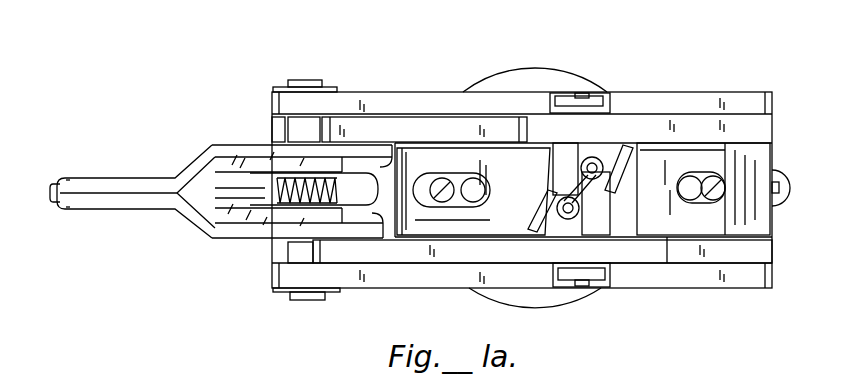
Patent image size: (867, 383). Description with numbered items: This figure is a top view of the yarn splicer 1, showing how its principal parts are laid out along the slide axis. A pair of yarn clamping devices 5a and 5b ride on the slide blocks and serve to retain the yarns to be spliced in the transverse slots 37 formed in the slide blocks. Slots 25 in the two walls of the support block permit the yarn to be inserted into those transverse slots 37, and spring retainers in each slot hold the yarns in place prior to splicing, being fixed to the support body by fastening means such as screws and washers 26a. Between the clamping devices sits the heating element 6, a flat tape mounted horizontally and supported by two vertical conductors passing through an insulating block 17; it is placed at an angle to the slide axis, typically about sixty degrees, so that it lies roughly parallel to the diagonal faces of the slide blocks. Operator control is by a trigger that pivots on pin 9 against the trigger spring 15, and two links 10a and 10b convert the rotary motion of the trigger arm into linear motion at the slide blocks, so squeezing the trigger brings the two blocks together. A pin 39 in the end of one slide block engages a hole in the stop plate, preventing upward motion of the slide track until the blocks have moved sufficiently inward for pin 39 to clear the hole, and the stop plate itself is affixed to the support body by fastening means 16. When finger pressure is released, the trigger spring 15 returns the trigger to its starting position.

The splicer 1 is at (737, 48).
The yarn clamping device 5a is at (658, 198).
The yarn clamping device 5b is at (530, 198).
The heating element 6 is at (615, 150).
The pin 9 is at (307, 298).
The link 10a is at (397, 252).
The link 10b is at (418, 125).
The trigger spring 15 is at (310, 200).
The fastening means 16 is at (785, 200).
The insulating block 17 is at (592, 152).
The slots 25 is at (563, 100).
The screws and washers 26a is at (583, 95).
The transverse slots 37 is at (557, 150).
The pin 39 is at (785, 179).